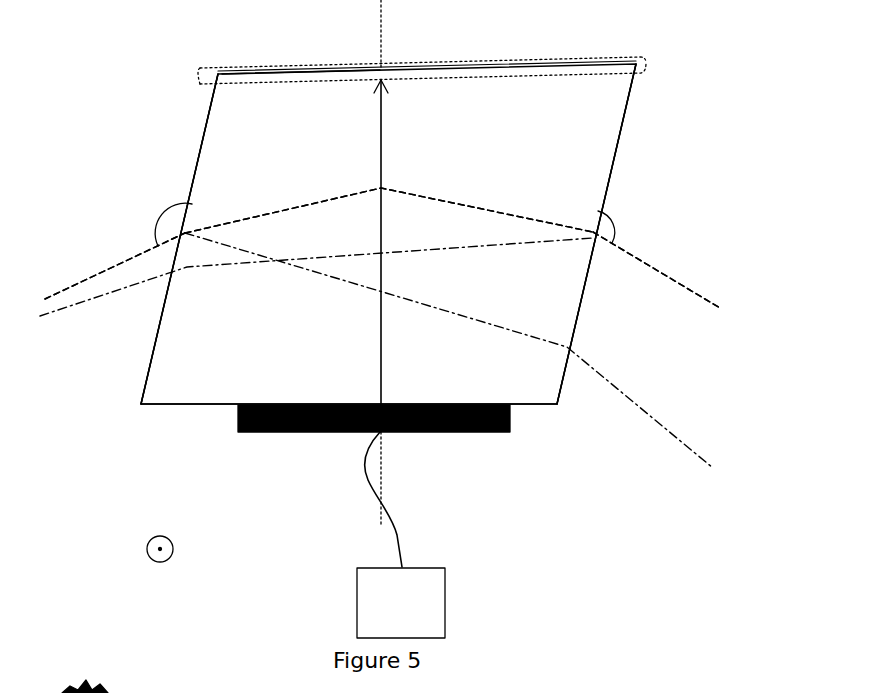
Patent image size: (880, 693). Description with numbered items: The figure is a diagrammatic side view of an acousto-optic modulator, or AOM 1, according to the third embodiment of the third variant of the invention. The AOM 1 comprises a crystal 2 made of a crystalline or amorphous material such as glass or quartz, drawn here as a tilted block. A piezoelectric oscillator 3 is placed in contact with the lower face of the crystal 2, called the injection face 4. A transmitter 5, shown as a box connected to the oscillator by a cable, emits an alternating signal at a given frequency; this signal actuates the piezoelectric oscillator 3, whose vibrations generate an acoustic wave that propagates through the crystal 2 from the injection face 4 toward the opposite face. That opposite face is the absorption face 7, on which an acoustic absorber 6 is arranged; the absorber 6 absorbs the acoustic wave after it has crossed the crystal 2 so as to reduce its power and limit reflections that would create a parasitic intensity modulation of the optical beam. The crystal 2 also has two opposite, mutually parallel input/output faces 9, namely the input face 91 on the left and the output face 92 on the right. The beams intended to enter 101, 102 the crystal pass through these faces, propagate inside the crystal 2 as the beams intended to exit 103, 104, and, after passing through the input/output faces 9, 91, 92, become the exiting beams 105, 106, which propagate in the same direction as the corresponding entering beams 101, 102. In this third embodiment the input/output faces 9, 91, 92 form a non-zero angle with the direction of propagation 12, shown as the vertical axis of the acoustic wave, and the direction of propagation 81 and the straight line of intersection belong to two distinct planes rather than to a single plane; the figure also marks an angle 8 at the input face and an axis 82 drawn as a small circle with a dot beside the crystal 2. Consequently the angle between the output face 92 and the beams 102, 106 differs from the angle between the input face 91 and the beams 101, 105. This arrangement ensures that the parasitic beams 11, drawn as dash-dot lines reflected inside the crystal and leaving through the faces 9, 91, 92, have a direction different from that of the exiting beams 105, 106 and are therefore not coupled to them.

The acousto-optic modulator (AOM) 1 is at (620, 577).
The crystal 2 is at (518, 373).
The piezoelectric oscillator 3 is at (323, 432).
The injection face 4 is at (183, 405).
The transmitter 5 is at (377, 592).
The acoustic absorber 6 is at (305, 78).
The absorption face 7 is at (400, 72).
The angle of incidence 8 is at (166, 224).
The direction of propagation 81 is at (382, 155).
The rotation axis 82 is at (172, 547).
The input/output faces 9 is at (388, 234).
The input face 91 is at (207, 132).
The output face 92 is at (613, 155).
The beam intended to enter the crystal 101 is at (88, 278).
The exiting beam 105 is at (115, 266).
The beam intended to enter the crystal 102 is at (663, 272).
The exiting beam 106 is at (656, 270).
The beam intended to exit the crystal 103 is at (260, 214).
The beam intended to exit the crystal 104 is at (389, 210).
The parasitic beams 11 is at (83, 300).
The direction of propagation 12 is at (383, 458).